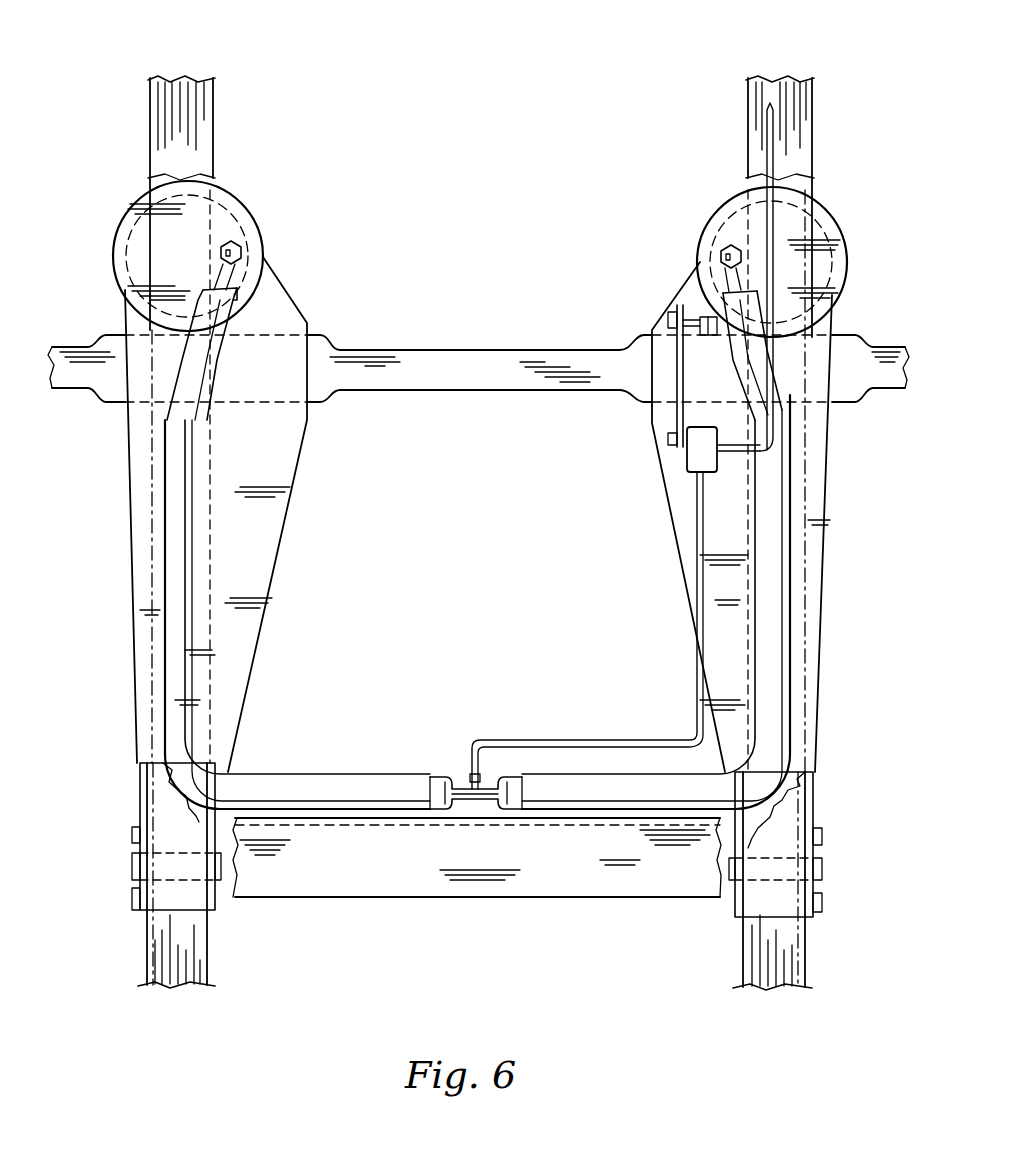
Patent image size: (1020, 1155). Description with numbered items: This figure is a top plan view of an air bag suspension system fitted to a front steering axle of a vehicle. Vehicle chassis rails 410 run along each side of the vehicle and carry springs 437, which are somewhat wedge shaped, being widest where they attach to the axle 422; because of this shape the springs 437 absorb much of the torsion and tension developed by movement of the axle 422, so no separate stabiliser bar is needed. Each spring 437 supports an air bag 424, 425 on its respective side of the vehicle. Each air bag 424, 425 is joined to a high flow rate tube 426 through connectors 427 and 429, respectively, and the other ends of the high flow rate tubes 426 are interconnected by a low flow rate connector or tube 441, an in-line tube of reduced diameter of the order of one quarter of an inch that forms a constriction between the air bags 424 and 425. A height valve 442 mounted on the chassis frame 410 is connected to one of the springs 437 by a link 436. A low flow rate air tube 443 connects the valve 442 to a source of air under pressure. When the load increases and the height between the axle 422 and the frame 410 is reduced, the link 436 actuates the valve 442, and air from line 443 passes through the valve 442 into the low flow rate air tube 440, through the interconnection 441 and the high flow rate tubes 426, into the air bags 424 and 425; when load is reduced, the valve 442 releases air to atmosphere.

The vehicle chassis rail 410 is at (213, 112).
The axle 422 is at (397, 382).
The air bag 424 is at (710, 223).
The air bag 425 is at (228, 197).
The high flow rate tube 426 is at (288, 798).
The connector 427 is at (725, 278).
The connector 429 is at (233, 268).
The link 436 is at (700, 338).
The spring 437 is at (284, 507).
The low flow rate air tube 440 is at (538, 740).
The low flow rate connector 441 is at (475, 793).
The height valve 442 is at (695, 455).
The low flow rate air tube 443 is at (768, 142).